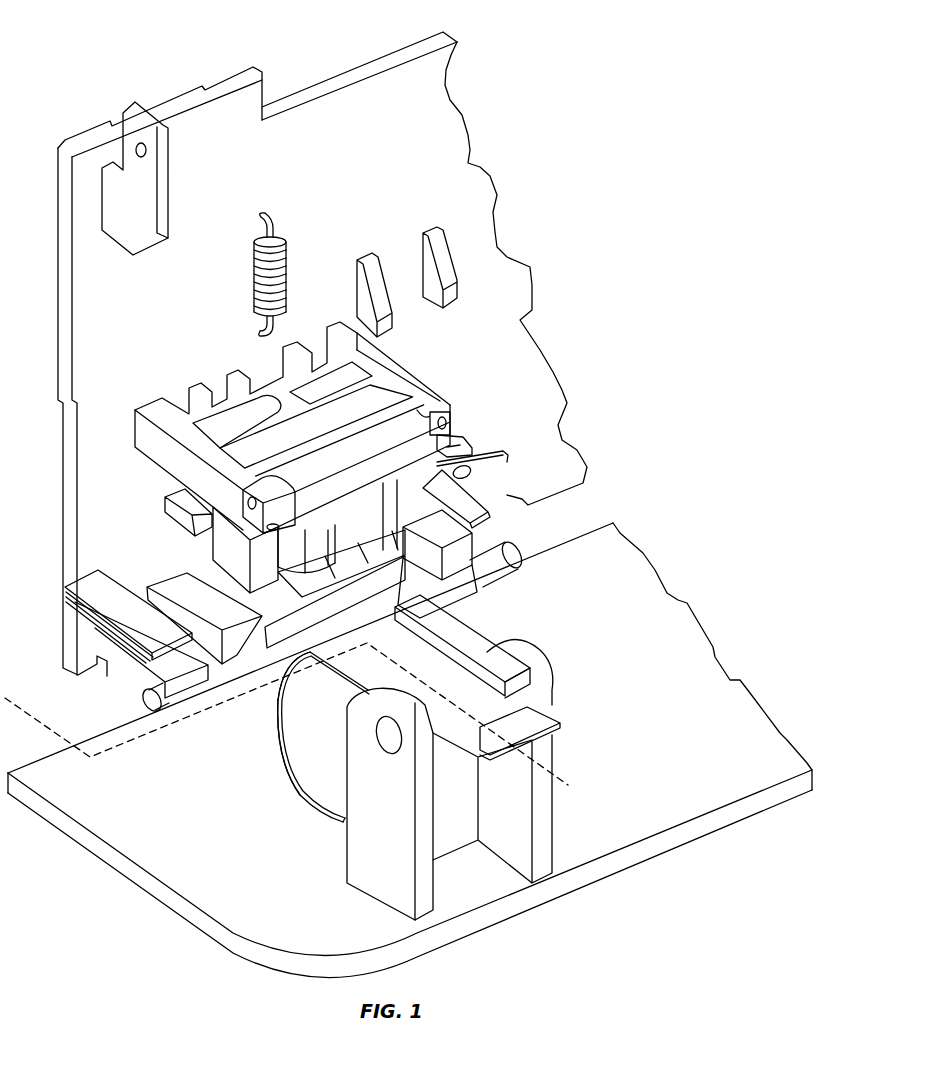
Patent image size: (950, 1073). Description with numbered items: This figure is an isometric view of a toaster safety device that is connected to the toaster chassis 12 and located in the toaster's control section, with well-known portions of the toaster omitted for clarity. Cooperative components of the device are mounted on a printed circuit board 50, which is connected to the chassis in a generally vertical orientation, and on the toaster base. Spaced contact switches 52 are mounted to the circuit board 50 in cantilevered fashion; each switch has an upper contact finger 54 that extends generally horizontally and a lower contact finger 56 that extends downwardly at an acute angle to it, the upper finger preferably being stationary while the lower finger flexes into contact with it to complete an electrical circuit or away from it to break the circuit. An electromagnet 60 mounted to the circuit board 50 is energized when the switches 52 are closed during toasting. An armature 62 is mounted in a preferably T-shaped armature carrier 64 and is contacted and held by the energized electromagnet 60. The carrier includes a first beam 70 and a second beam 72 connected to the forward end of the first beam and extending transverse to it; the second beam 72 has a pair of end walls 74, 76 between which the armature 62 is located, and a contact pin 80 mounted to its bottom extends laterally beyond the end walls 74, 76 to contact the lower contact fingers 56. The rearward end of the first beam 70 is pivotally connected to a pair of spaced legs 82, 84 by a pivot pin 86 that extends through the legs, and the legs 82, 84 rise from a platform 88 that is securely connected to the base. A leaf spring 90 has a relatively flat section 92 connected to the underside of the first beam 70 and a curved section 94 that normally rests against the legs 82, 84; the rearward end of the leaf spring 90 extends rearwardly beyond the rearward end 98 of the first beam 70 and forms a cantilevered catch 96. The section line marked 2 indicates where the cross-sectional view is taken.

The toaster chassis 12 is at (594, 331).
The printed circuit board 50 is at (358, 92).
The contact switches 52 is at (502, 529).
The upper contact finger 54 is at (103, 585).
The lower contact finger 56 is at (148, 665).
The electromagnet 60 is at (227, 543).
The armature 62 is at (307, 615).
The armature carrier 64 is at (513, 677).
The first beam 70 is at (494, 650).
The second beam 72 is at (277, 668).
The end wall 74 is at (180, 585).
The end wall 76 is at (425, 528).
The contact pin 80 is at (147, 704).
The leg 82 is at (334, 804).
The leg 84 is at (540, 823).
The pivot pin 86 is at (387, 733).
The platform 88 is at (67, 768).
The leaf spring 90 is at (321, 819).
The flat section 92 is at (345, 688).
The curved section 94 is at (327, 770).
The cantilevered catch 96 is at (542, 732).
The rearward end 98 is at (525, 700).
The section line 2- 2 is at (5, 698).